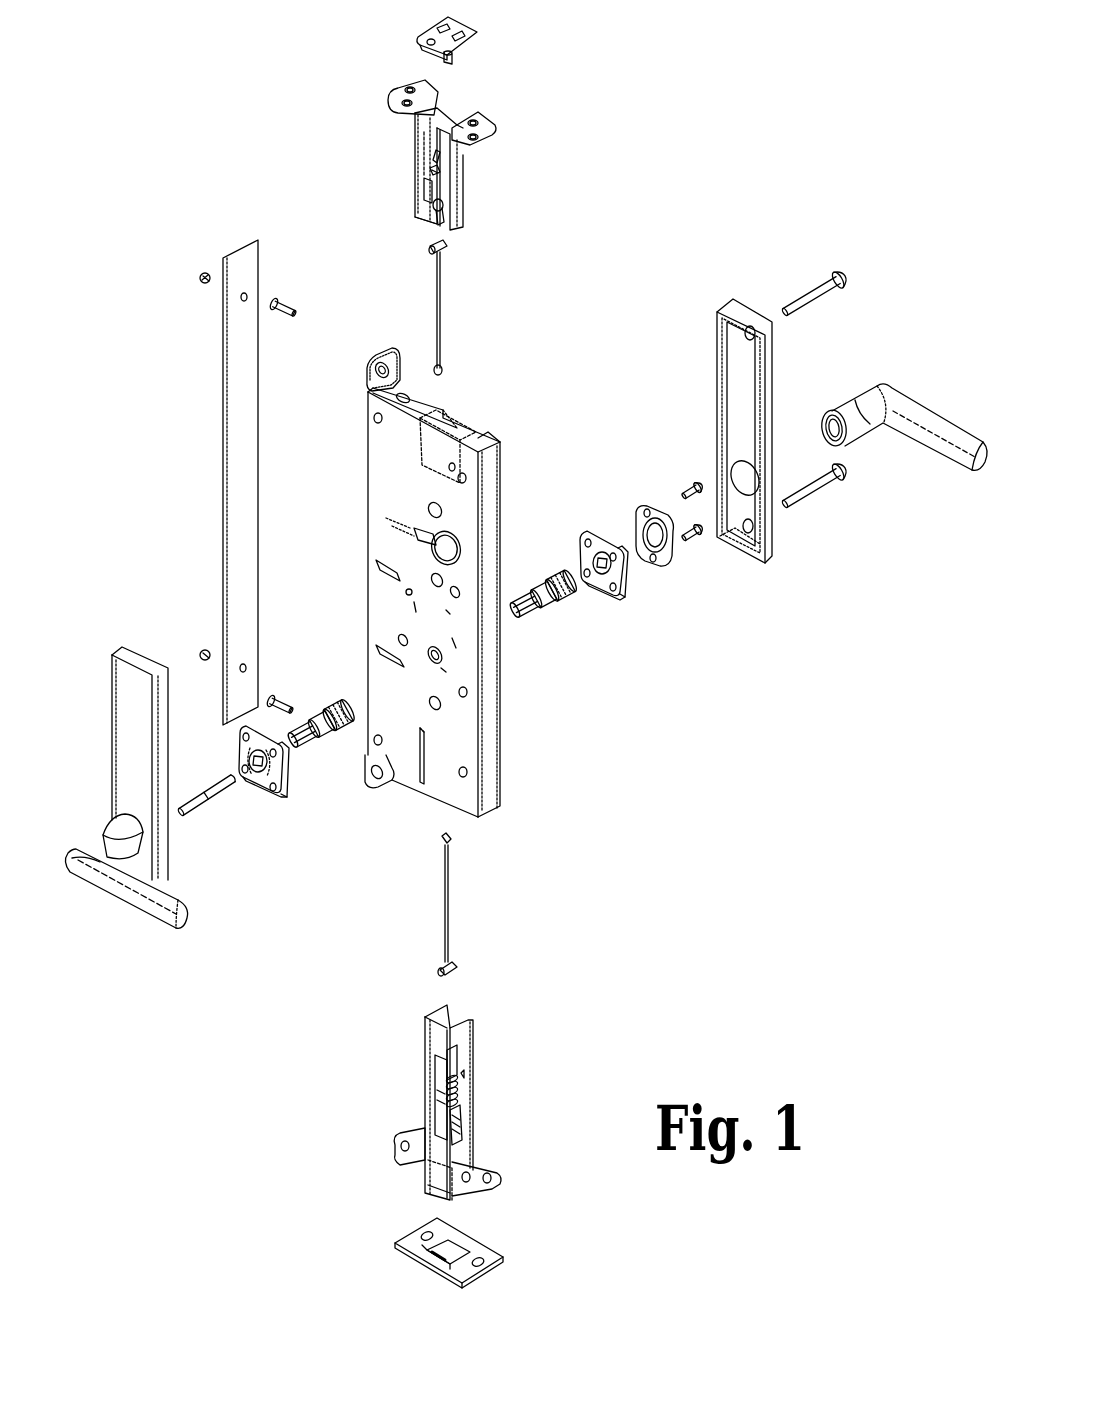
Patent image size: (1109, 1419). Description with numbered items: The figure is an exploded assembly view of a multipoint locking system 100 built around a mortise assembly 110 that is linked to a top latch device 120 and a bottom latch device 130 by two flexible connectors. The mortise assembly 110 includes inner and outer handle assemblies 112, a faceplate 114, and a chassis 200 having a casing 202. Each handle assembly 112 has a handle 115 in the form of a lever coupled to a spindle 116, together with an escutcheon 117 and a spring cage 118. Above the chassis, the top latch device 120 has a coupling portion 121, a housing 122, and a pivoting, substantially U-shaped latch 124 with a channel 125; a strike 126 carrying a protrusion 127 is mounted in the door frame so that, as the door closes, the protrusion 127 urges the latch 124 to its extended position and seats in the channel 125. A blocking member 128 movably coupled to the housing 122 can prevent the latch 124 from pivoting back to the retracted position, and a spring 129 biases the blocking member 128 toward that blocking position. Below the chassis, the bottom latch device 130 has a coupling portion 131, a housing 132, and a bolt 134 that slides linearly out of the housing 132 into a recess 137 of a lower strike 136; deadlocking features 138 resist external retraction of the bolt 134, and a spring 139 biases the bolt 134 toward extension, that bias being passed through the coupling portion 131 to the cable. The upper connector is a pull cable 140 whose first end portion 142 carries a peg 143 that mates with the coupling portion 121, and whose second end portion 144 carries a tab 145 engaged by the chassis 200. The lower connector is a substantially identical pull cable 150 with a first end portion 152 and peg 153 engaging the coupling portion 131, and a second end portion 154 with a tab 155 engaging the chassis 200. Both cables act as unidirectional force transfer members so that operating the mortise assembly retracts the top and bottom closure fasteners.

The multipoint locking system 100 is at (200, 150).
The mortise assembly 110 is at (163, 512).
The handle assemblies 112 is at (140, 612).
The faceplate 114 is at (222, 372).
The handle 115 is at (950, 460).
The spindle 116 is at (553, 602).
The escutcheon 117 is at (720, 305).
The spring cage 118 is at (628, 585).
The top latch device 120 is at (492, 190).
The coupling portion 121 is at (437, 216).
The housing 122 is at (420, 138).
The latch 124 is at (447, 107).
The channel 125 is at (464, 105).
The strike 126 is at (472, 33).
The protrusion 127 is at (455, 58).
The blocking member 128 is at (430, 160).
The spring 129 is at (418, 192).
The bottom latch device 130 is at (365, 1098).
The coupling portion 131 is at (475, 1068).
The housing 132 is at (473, 1052).
The bolt 134 is at (437, 1195).
The strike 136 is at (490, 1250).
The recess 137 is at (420, 1245).
The deadlocking features 138 is at (468, 1125).
The spring 139 is at (425, 1085).
The cable 140 is at (405, 295).
The first end portion 142 is at (452, 263).
The peg 143 is at (447, 246).
The second end portion 144 is at (449, 345).
The tab 145 is at (444, 370).
The cable 150 is at (408, 908).
The first end portion 152 is at (466, 940).
The peg 153 is at (457, 966).
The second end portion 154 is at (468, 865).
The tab 155 is at (450, 838).
The chassis 200 is at (520, 497).
The casing 202 is at (490, 543).